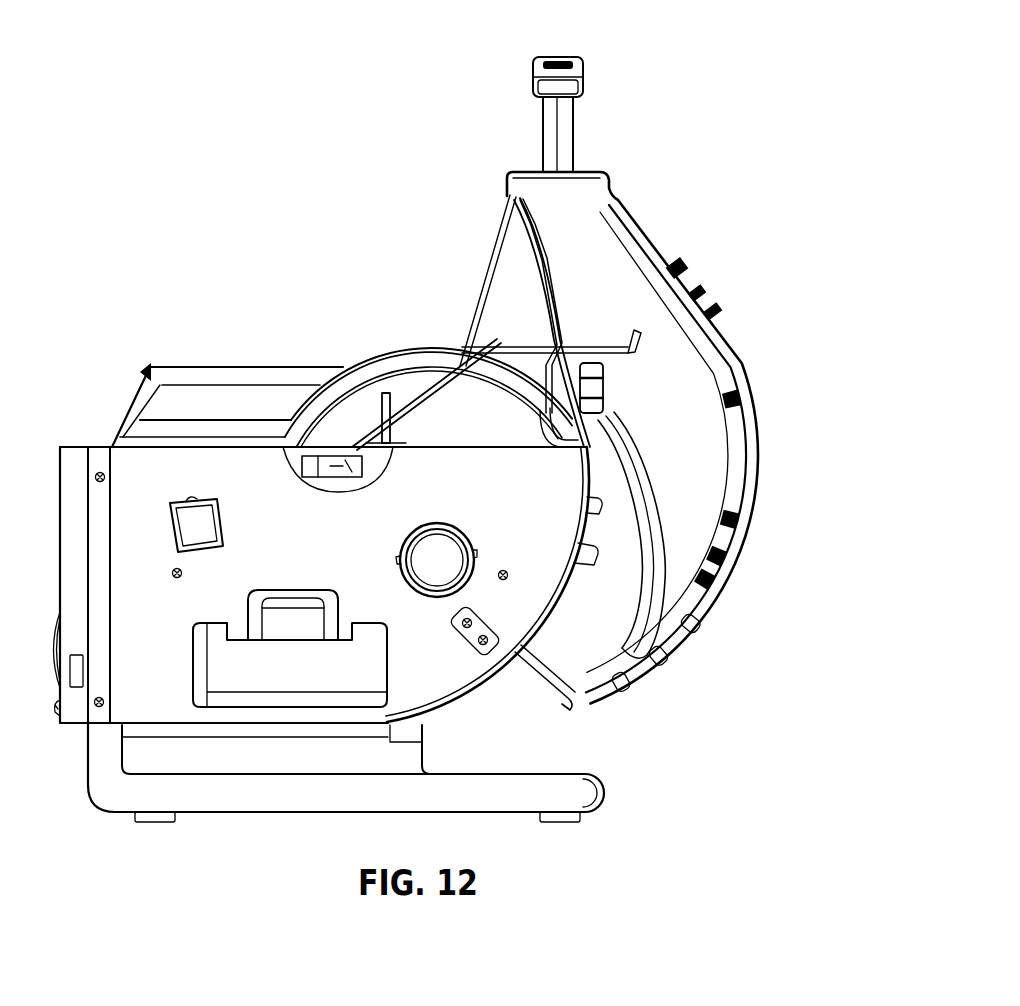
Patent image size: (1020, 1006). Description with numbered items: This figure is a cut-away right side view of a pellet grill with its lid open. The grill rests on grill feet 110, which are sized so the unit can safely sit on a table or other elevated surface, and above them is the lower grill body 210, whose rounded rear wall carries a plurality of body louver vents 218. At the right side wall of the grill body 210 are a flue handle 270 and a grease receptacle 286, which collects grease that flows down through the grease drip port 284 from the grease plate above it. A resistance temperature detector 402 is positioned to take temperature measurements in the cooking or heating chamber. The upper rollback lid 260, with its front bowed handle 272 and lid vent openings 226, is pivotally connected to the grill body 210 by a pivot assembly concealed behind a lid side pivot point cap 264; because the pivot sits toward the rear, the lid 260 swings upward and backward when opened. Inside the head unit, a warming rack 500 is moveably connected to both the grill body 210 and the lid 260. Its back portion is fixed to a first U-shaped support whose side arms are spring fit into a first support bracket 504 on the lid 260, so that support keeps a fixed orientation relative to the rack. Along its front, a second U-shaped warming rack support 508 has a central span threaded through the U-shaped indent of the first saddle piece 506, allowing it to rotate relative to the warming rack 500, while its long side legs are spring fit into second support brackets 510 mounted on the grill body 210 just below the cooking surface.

The grill feet 110 is at (592, 787).
The lower grill body 210 is at (491, 688).
The body louver vents 218 is at (588, 560).
The lid vent openings 226 is at (704, 617).
The upper rollback lid 260 is at (659, 211).
The lid side pivot point cap 264 is at (441, 554).
The flue handle 270 is at (228, 535).
The handle 272 is at (592, 60).
The grease drip port 284 is at (305, 590).
The grease receptacle 286 is at (310, 681).
The resistance temperature detector 402 is at (346, 368).
The warming rack 500 is at (639, 330).
The first support bracket 504 is at (612, 368).
The first saddle piece 506 is at (455, 336).
The second U-shaped warming rack support 508 is at (380, 396).
The second support bracket 510 is at (300, 465).